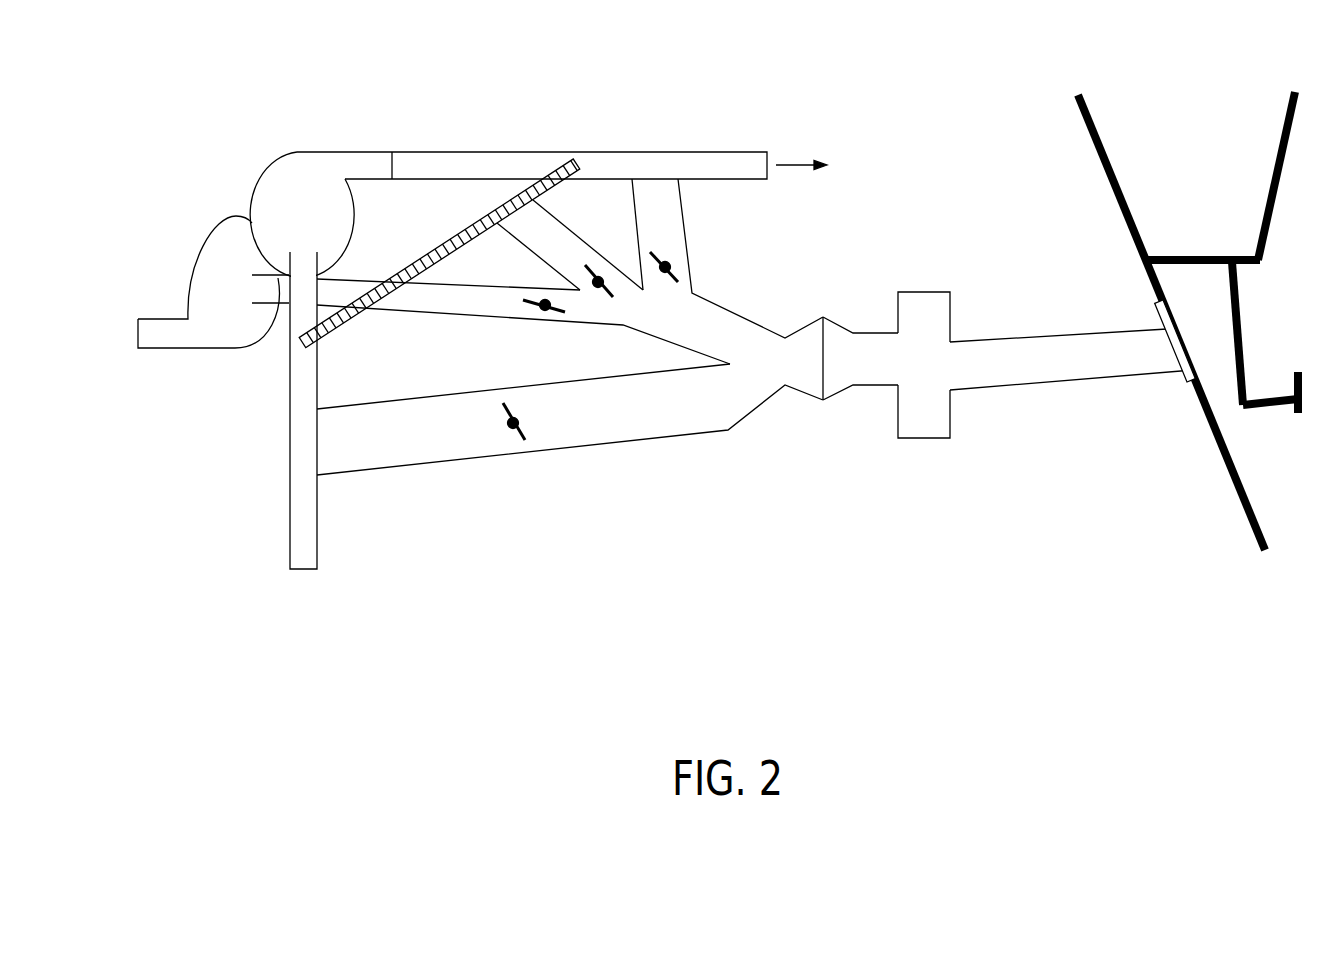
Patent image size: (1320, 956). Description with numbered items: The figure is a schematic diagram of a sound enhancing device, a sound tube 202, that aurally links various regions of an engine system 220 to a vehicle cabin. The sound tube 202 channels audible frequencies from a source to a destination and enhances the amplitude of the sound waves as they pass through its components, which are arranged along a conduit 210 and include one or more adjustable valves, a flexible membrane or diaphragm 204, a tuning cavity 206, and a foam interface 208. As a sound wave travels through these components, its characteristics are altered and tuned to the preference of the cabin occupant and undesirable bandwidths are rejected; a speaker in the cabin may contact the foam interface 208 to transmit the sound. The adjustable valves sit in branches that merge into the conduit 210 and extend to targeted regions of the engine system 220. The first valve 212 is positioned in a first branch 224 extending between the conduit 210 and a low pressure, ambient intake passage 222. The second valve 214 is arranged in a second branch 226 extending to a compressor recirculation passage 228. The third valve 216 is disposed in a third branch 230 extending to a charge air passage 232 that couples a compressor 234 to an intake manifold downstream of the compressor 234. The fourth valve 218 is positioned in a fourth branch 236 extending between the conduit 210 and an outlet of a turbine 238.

The sound tube 202 is at (830, 263).
The flexible membrane or diaphragm 204 is at (820, 346).
The tuning cavity 206 is at (926, 292).
The foam interface 208 is at (1170, 342).
The conduit 210 is at (1007, 297).
The first valve 212 is at (521, 422).
The second valve 214 is at (601, 277).
The third valve 216 is at (674, 268).
The fourth valve 218 is at (540, 312).
The engine system 220 is at (160, 133).
The low pressure intake passage 222 is at (289, 511).
The first branch 224 is at (627, 424).
The second branch 226 is at (578, 267).
The compressor recirculation passage 228 is at (452, 237).
The third branch 230 is at (680, 244).
The charge air passage 232 is at (523, 151).
The compressor 234 is at (280, 156).
The fourth branch 236 is at (494, 314).
The turbine 238 is at (178, 258).